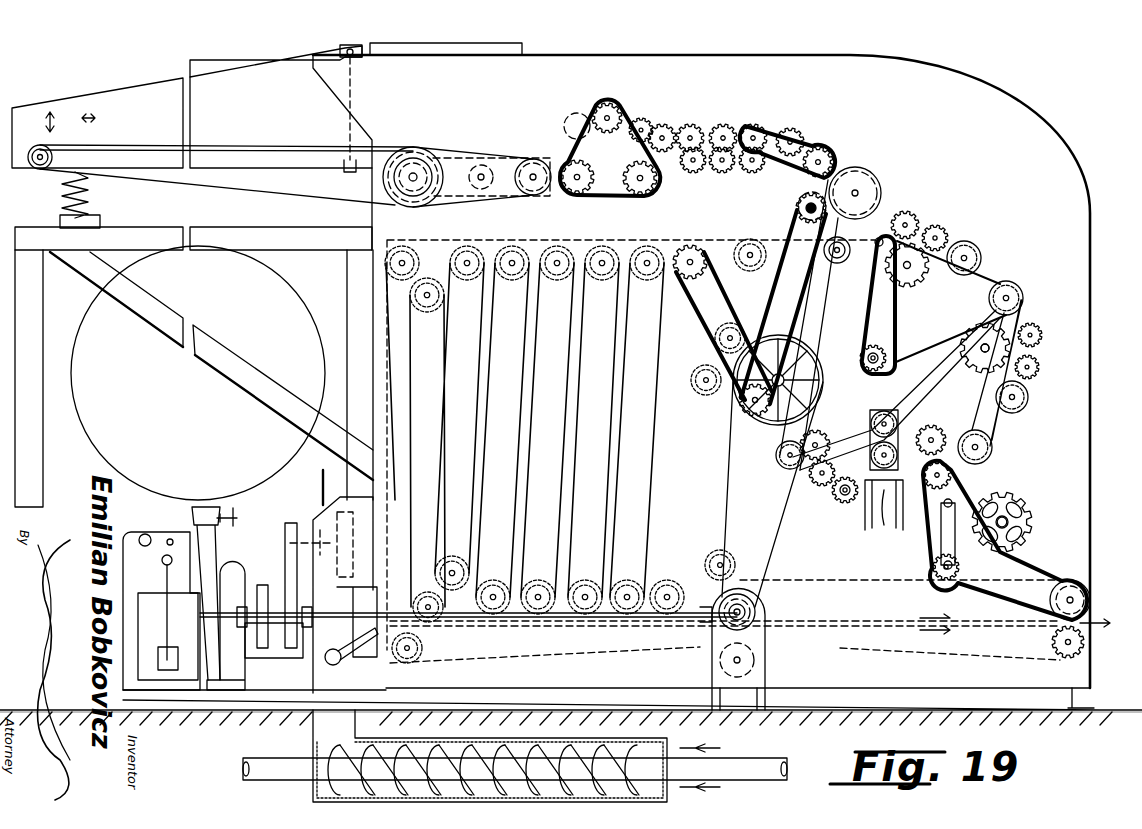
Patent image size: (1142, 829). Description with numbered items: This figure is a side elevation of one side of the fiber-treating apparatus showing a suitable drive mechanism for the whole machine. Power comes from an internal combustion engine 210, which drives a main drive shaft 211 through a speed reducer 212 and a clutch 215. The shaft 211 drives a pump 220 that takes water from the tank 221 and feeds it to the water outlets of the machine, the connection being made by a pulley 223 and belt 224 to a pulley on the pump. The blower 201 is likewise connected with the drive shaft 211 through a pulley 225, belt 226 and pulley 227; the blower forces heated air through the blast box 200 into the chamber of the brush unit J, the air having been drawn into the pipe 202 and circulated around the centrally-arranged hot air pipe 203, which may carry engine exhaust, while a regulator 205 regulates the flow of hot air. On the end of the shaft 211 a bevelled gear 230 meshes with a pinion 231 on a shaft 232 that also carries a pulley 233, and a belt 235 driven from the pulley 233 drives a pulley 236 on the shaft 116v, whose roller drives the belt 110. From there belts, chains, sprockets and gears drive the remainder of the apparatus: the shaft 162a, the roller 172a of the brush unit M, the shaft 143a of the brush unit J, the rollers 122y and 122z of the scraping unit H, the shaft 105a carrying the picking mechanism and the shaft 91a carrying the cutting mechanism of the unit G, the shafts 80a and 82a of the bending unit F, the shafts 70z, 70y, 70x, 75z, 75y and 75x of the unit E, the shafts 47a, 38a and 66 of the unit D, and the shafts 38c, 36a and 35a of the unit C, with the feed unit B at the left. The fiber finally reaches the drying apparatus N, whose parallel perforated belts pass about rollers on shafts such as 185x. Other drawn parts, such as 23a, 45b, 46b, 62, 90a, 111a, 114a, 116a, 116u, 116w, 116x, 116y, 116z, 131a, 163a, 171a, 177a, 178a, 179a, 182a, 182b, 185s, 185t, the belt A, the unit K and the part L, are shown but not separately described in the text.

The feed belt pulley 23a is at (38, 166).
The shaft 35a is at (413, 172).
The shaft 36a is at (481, 174).
The shaft 38c is at (533, 172).
The shaft 38a is at (577, 184).
The shaft 47a is at (607, 110).
The roller 45b is at (575, 116).
The gear 46b is at (641, 120).
The gear 62 is at (668, 126).
The shaft 66 is at (640, 186).
The shaft 70z is at (694, 125).
The shaft 70y is at (727, 124).
The shaft 70x is at (758, 124).
The shaft 75z is at (694, 174).
The shaft 75y is at (723, 174).
The shaft 75x is at (760, 176).
The shaft 80a is at (797, 206).
The shaft 82a is at (830, 160).
The pulley 90a is at (858, 193).
The shaft 91a is at (803, 214).
The shaft 105a is at (838, 264).
The belt 110 is at (888, 380).
The gear 111a is at (912, 226).
The gear 114a is at (944, 240).
The chain 116a is at (877, 247).
The sprocket 116u is at (868, 358).
The shaft 116v is at (785, 355).
The belt 116w is at (848, 420).
The gear 116x is at (931, 434).
The gear 116y is at (978, 352).
The gear 116z is at (908, 270).
The roller 122z is at (970, 262).
The roller 122y is at (1012, 300).
The gear wheel 131a is at (1006, 512).
The shaft 143a is at (1026, 397).
The shaft 162a is at (839, 496).
The sprocket 163a is at (944, 476).
The gear 171a is at (816, 480).
The roller 172a is at (783, 460).
The conveyor roller 177a is at (402, 255).
The roller 178a is at (415, 652).
The roller 179a is at (745, 660).
The pulley 182a is at (1055, 598).
The sprocket 182b is at (1062, 642).
The conveyor roller 185s is at (436, 592).
The conveyor roller 185t is at (428, 290).
The shaft 185x is at (690, 250).
The blast box 200 is at (312, 745).
The blower 201 is at (345, 595).
The pipe 202 is at (665, 790).
The hot air pipe 203 is at (757, 778).
The regulator 205 is at (345, 660).
The internal combustion engine 210 is at (133, 540).
The main drive shaft 211 is at (470, 615).
The speed reducer 212 is at (145, 600).
The clutch 215 is at (158, 623).
The pump 220 is at (230, 560).
The tank 221 is at (211, 373).
The pulley 223 is at (237, 619).
The belt 224 is at (274, 585).
The pulley 225 is at (285, 650).
The belt 226 is at (245, 513).
The pulley 227 is at (318, 512).
The bevelled gear 230 is at (718, 620).
The pinion 231 is at (752, 604).
The shaft 232 is at (748, 613).
The pulley 233 is at (745, 624).
The belt 235 is at (770, 505).
The pulley 236 is at (755, 412).
The feed belt A is at (380, 207).
The unit B is at (233, 78).
The unit C is at (503, 153).
The unit D is at (632, 97).
The unit E is at (702, 112).
The bending unit F is at (810, 128).
The unit G is at (880, 168).
The scraping unit H is at (1008, 270).
The brush unit J is at (1030, 418).
The chain drive K is at (1040, 520).
The fork L is at (884, 520).
The drying apparatus N is at (578, 602).